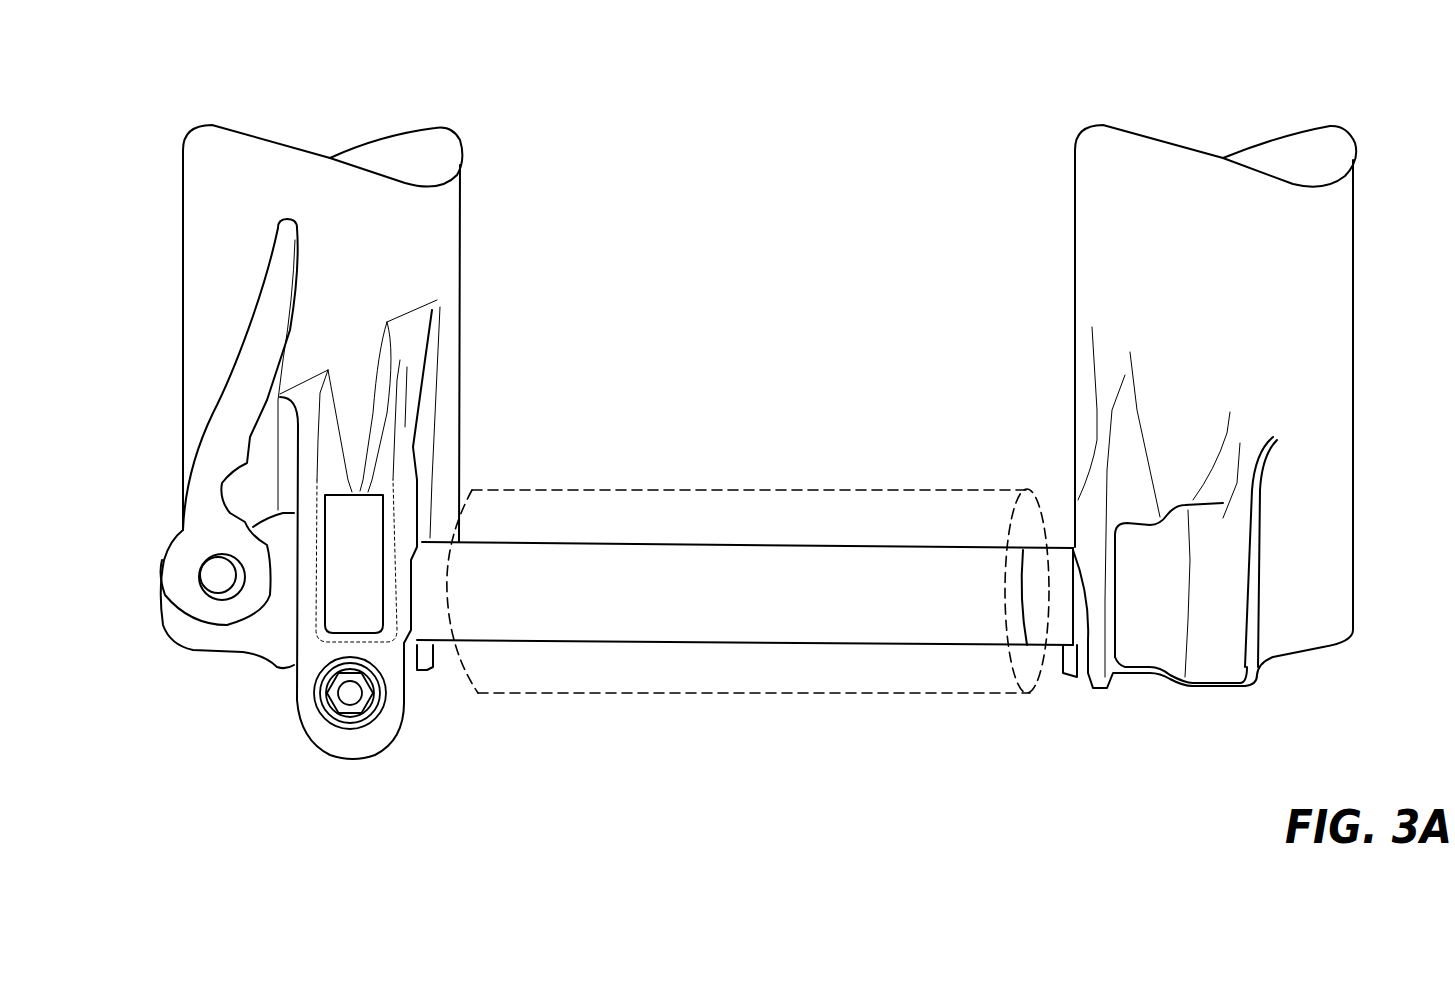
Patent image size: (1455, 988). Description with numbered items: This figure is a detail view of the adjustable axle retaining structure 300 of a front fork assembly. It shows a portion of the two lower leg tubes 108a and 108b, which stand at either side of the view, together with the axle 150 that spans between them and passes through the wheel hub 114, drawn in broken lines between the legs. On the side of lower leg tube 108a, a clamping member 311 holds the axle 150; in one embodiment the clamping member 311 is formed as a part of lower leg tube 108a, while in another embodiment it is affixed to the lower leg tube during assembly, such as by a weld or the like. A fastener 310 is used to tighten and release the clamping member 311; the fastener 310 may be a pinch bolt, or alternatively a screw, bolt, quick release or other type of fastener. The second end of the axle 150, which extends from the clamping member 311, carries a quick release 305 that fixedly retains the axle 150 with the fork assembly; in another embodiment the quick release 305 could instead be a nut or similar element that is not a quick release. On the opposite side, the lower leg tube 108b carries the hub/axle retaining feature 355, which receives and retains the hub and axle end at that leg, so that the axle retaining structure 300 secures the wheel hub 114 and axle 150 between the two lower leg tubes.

The adjustable axle retaining structure 300 is at (442, 51).
The lower leg tube 108a is at (217, 275).
The lower leg tube 108b is at (1340, 260).
The quick release 305 is at (173, 582).
The fastener 310 is at (347, 710).
The clamping member 311 is at (402, 742).
The axle 150 is at (762, 600).
The wheel hub 114 is at (878, 492).
The hub/axle retaining feature 355 is at (1123, 663).